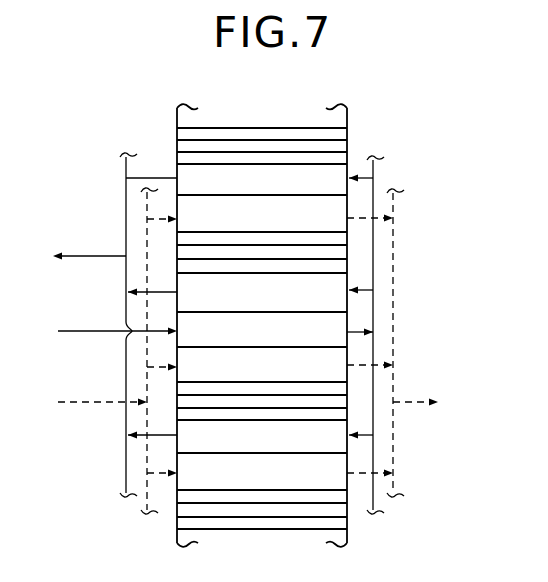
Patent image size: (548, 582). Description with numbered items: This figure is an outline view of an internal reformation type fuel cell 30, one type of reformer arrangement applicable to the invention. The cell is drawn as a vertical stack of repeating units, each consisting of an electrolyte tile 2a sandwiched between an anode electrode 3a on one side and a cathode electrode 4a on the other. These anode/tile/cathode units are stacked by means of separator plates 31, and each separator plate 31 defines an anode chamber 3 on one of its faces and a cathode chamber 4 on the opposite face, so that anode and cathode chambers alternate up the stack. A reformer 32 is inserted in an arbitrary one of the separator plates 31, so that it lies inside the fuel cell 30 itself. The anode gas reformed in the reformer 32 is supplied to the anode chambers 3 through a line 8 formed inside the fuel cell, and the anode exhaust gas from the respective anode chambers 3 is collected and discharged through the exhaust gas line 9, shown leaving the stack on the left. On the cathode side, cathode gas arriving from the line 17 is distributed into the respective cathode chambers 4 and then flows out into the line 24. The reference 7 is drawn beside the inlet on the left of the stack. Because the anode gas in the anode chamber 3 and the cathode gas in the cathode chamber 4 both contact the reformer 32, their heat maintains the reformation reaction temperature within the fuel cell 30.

The internal reformation type fuel cell 30 is at (363, 126).
The separator plate 31 is at (350, 192).
The anode chamber 3 is at (262, 309).
The cathode chamber 4 is at (262, 342).
The reformer 32 is at (262, 330).
The cathode electrode 4a is at (350, 232).
The electrolyte tile 2a is at (350, 252).
The anode electrode 3a is at (350, 268).
The line 8 is at (377, 337).
The line 24 is at (415, 405).
The signal path 7 is at (86, 331).
The exhaust gas line 9 is at (88, 255).
The line 17 is at (90, 400).